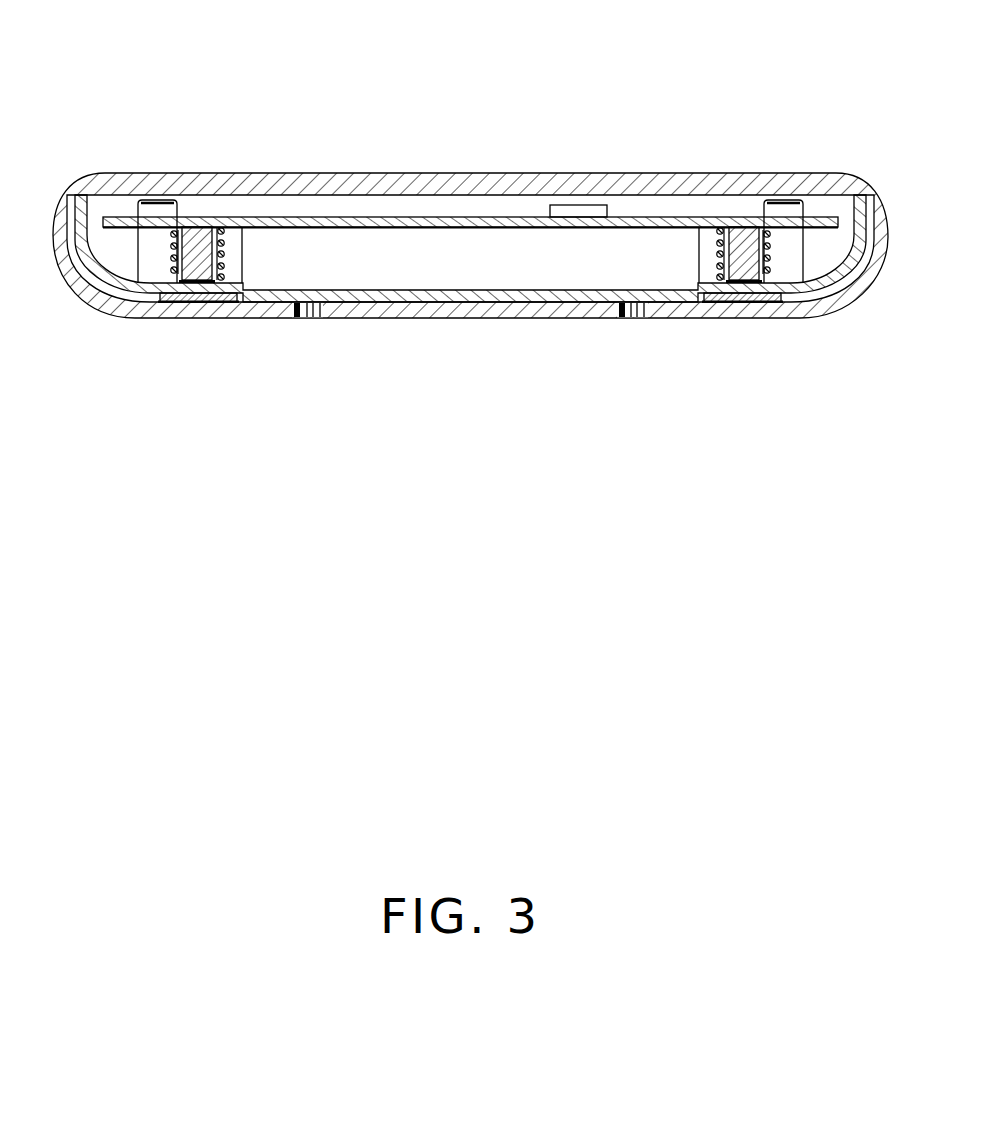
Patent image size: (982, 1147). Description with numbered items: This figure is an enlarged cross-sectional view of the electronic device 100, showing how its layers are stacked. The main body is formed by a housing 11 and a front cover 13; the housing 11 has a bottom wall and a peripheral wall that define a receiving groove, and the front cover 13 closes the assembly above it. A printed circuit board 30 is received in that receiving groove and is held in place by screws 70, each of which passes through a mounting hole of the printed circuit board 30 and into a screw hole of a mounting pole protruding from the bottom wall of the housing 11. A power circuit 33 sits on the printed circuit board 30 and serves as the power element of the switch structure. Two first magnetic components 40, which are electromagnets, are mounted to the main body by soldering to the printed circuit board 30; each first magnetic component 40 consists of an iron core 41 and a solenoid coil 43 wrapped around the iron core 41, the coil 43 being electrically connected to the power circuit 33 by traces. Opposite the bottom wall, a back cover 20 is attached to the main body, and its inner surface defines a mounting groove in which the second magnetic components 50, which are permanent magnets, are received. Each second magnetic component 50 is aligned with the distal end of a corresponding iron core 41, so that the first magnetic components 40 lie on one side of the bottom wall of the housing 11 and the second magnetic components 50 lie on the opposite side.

The electronic device 100 is at (448, 26).
The housing 11 is at (327, 297).
The front cover 13 is at (410, 188).
The back cover 20 is at (385, 307).
The printed circuit board 30 is at (468, 222).
The power circuit 33 is at (580, 206).
The first magnetic component 40 is at (425, 318).
The iron core 41 is at (188, 276).
The solenoid coil 43 is at (171, 247).
The second magnetic component 50 is at (208, 300).
The screw 70 is at (158, 205).